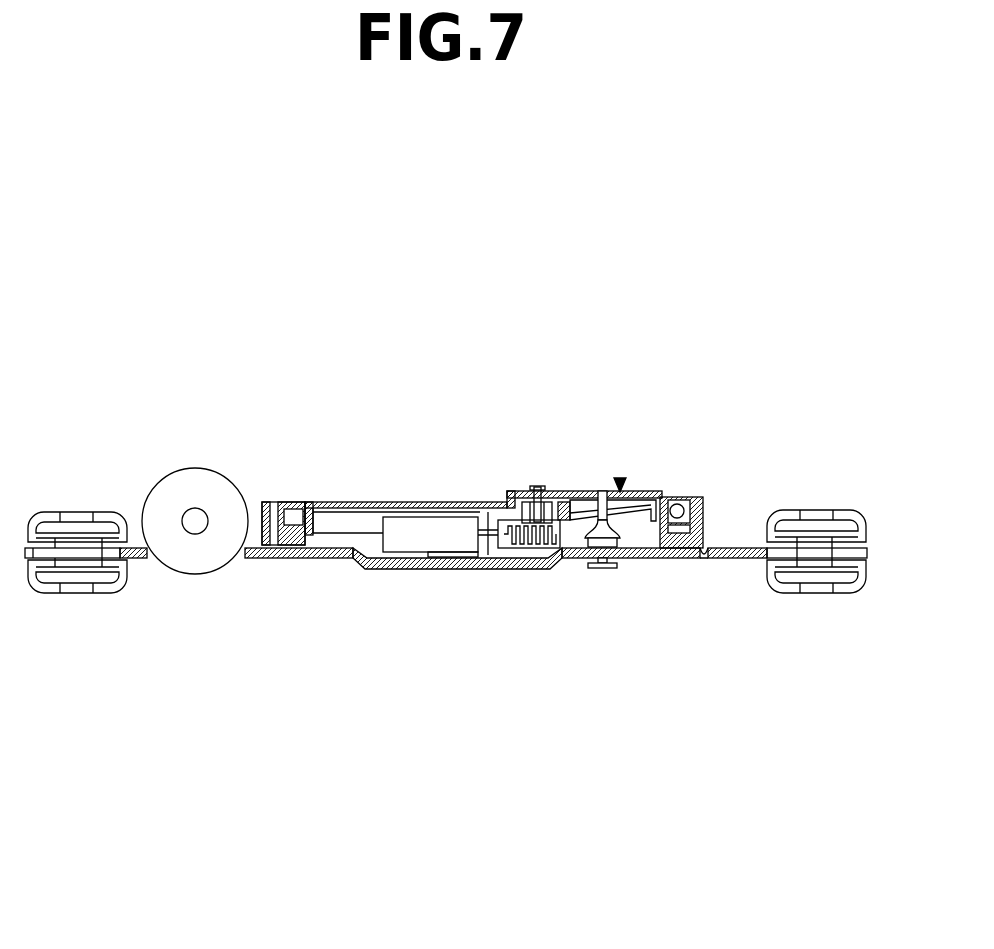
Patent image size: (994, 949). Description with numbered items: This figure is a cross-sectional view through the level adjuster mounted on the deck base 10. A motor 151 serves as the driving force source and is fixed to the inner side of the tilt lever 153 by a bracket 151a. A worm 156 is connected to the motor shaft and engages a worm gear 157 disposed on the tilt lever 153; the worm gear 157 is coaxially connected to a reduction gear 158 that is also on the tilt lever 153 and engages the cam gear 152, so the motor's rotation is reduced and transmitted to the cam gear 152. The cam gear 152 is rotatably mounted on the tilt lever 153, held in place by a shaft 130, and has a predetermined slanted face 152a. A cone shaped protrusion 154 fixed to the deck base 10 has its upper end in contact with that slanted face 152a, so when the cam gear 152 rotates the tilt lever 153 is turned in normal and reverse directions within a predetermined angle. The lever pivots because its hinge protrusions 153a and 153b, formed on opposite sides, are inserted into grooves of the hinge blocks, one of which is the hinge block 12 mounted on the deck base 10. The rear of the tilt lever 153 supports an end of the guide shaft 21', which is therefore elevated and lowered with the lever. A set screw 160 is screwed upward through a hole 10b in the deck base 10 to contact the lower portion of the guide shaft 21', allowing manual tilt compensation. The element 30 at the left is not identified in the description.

The deck base 10 is at (748, 545).
The hole 10b is at (703, 560).
The hinge block 12 is at (282, 560).
The roller wheel 30 is at (173, 562).
The shaft 130 is at (600, 490).
The motor 151 is at (400, 540).
The bracket 151a is at (483, 568).
The cam gear 152 is at (620, 480).
The slanted face 152a is at (566, 492).
The tilt lever 153 is at (397, 501).
The hinge protrusion 153a is at (292, 502).
The hinge protrusion 153b is at (700, 497).
The protrusion 154 is at (600, 568).
The worm 156 is at (502, 568).
The worm gear 157 is at (555, 568).
The reduction gear 158 is at (533, 505).
The set screw 160 is at (673, 548).
The guide shaft 21' is at (692, 461).